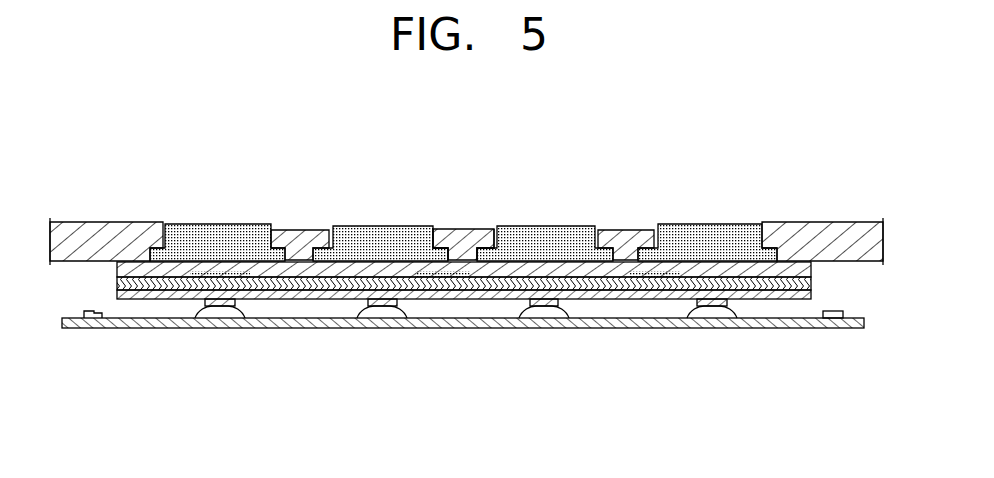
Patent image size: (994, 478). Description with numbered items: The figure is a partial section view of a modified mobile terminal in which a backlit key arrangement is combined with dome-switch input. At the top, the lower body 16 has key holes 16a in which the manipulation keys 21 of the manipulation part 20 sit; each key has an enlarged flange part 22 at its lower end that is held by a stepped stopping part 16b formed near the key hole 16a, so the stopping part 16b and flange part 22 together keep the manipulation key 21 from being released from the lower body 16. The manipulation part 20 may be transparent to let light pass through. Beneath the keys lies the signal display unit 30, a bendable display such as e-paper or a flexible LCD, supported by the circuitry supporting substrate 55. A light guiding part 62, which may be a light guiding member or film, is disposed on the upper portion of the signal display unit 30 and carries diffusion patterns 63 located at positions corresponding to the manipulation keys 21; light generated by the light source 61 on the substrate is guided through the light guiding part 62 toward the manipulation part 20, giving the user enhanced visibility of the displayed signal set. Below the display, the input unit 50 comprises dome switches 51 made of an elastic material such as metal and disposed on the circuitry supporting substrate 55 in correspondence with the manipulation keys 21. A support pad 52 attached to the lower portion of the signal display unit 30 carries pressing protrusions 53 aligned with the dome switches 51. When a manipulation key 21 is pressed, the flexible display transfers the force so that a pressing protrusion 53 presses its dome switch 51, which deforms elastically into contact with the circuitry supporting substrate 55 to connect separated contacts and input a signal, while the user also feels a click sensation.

The manipulation part 20 is at (239, 195).
The manipulation key 21 is at (222, 225).
The flange part 22 is at (299, 213).
The lower body 16 is at (463, 212).
The key hole 16a is at (418, 227).
The stopping part 16b is at (505, 227).
The signal display unit 30 is at (464, 320).
The input unit 50 is at (463, 356).
The dome switch 51 is at (544, 338).
The support pad 52 is at (463, 300).
The pressing protrusion 53 is at (377, 312).
The circuitry supporting substrate 55 is at (797, 329).
The light source 61 is at (93, 314).
The light guiding part 62 is at (268, 270).
The diffusion pattern 63 is at (221, 300).